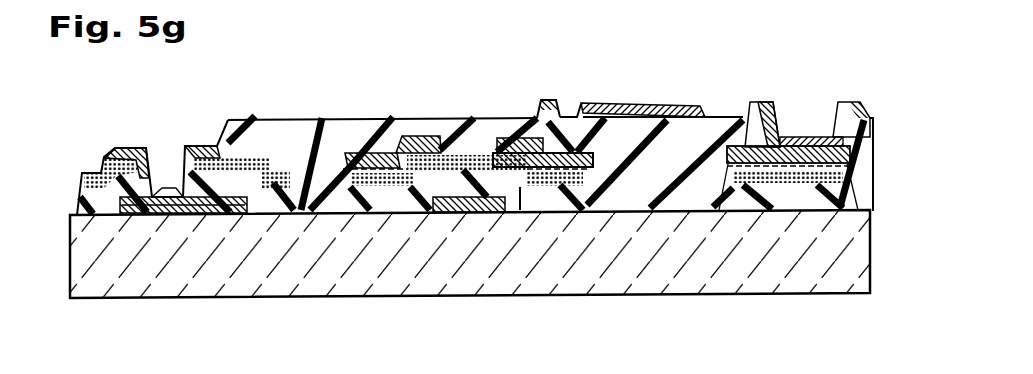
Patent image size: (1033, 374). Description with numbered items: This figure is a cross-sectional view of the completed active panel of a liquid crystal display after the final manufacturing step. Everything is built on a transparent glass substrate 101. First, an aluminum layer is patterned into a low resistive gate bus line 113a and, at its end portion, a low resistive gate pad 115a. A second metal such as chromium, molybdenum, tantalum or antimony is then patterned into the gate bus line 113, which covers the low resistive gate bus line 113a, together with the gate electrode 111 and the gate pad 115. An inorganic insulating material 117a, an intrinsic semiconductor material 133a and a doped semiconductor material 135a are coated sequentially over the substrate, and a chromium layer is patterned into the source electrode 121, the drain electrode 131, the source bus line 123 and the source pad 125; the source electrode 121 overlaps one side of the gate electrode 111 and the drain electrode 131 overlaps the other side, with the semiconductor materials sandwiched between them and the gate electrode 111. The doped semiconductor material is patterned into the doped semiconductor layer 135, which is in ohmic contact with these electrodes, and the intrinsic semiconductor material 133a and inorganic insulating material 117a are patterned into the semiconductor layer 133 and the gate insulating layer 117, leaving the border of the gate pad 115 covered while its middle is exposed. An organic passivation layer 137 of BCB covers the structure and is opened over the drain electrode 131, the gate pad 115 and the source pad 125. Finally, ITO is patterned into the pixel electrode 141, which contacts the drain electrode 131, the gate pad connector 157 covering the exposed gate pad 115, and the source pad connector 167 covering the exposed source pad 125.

The transparent glass substrate 101 is at (643, 280).
The gate electrode 111 is at (457, 204).
The gate bus line 113 is at (283, 216).
The low resistive gate bus line 113a is at (217, 216).
The gate pad 115 is at (126, 216).
The low resistive gate pad 115a is at (157, 216).
The gate insulating layer 117 is at (380, 204).
The inorganic insulating material 117a is at (77, 172).
The source electrode 121 is at (423, 145).
The source bus line 123 is at (350, 160).
The source pad 125 is at (803, 136).
The drain electrode 131 is at (567, 204).
The semiconductor layer 133 is at (523, 204).
The intrinsic semiconductor material 133a is at (112, 147).
The doped semiconductor layer 135 is at (397, 152).
The doped semiconductor material 135a is at (833, 204).
The passivation layer 137 is at (300, 130).
The pixel electrode 141 is at (632, 106).
The gate pad connector 157 is at (162, 190).
The source pad connector 167 is at (846, 104).